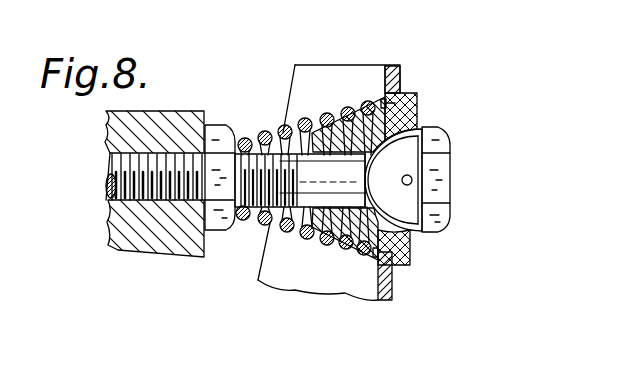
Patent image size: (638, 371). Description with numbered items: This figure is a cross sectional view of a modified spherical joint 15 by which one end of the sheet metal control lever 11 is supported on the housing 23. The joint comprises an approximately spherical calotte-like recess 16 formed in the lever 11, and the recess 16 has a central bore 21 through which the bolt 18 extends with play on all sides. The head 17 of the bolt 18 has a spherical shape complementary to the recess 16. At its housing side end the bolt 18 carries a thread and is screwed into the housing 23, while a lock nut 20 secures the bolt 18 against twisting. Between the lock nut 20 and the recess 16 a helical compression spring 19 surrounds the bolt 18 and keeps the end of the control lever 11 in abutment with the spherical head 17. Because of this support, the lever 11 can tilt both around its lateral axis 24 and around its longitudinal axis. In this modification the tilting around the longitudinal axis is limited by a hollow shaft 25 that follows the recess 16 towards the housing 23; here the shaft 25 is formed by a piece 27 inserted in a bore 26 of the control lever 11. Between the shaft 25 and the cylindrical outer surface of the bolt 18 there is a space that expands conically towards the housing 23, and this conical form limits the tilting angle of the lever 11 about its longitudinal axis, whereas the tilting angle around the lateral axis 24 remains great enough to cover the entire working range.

The control lever 11 is at (392, 287).
The spherical joint 15 is at (445, 112).
The spherical calotte-like recess 16 is at (413, 95).
The head of bolt 17 is at (408, 160).
The bolt 18 is at (312, 187).
The helical compression spring 19 is at (262, 135).
The lock nut 20 is at (218, 224).
The central bore 21 is at (337, 213).
The housing 23 is at (167, 118).
The lateral axis 24 is at (412, 182).
The hollow shaft 25 is at (318, 123).
The bore of control lever 26 is at (395, 245).
The inserted piece 27 is at (358, 115).